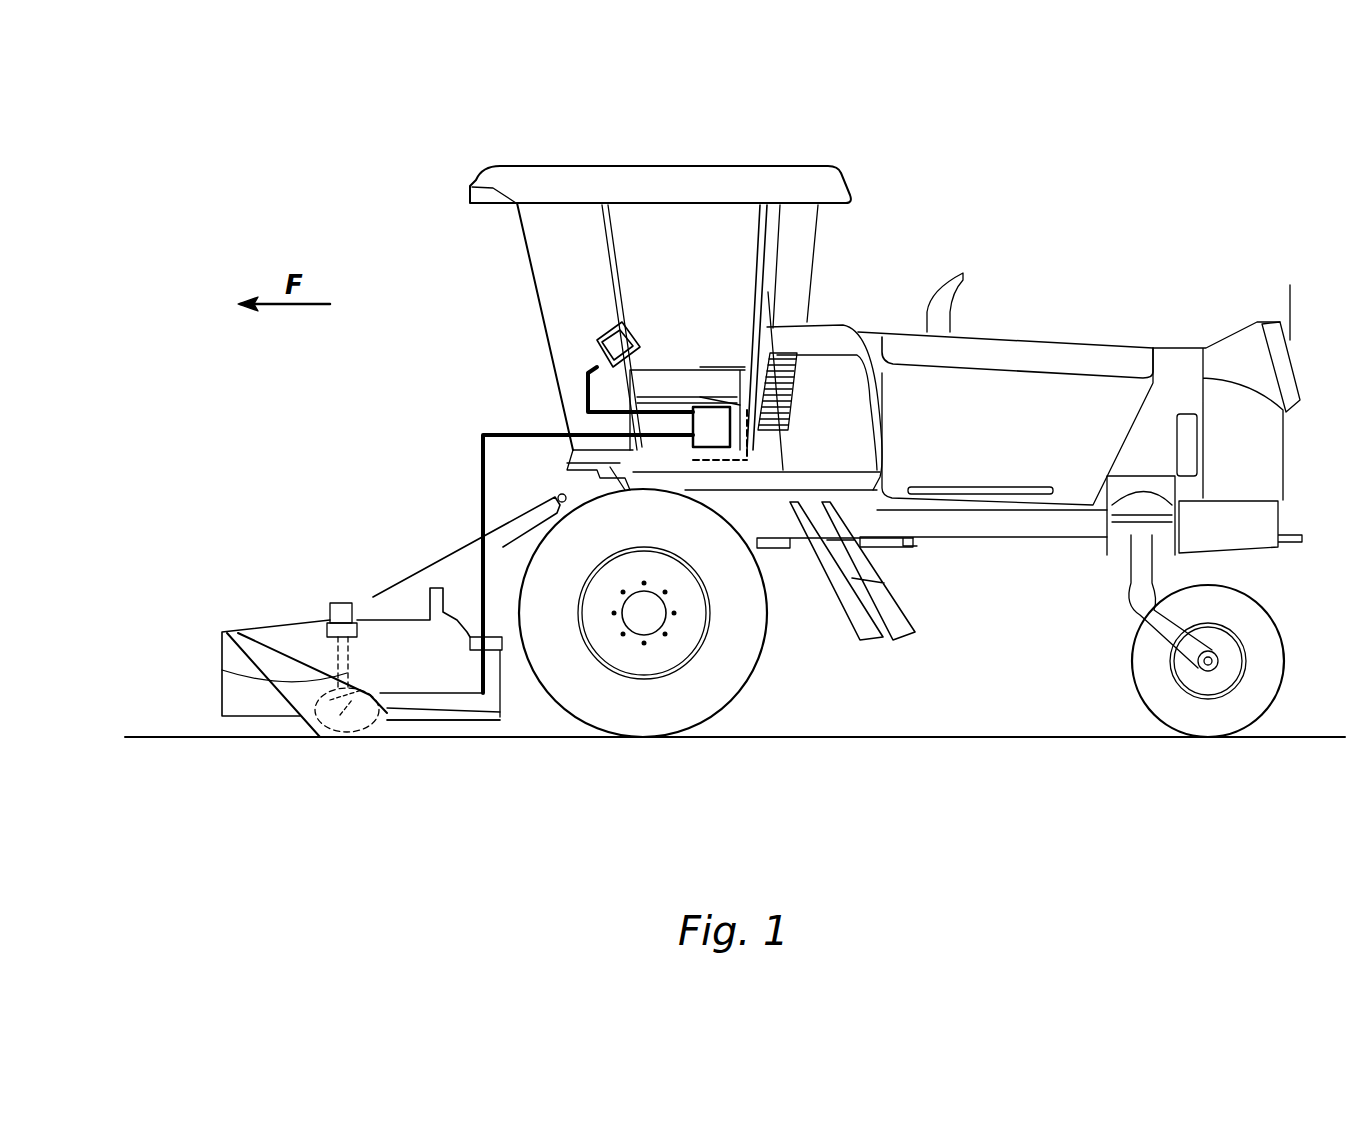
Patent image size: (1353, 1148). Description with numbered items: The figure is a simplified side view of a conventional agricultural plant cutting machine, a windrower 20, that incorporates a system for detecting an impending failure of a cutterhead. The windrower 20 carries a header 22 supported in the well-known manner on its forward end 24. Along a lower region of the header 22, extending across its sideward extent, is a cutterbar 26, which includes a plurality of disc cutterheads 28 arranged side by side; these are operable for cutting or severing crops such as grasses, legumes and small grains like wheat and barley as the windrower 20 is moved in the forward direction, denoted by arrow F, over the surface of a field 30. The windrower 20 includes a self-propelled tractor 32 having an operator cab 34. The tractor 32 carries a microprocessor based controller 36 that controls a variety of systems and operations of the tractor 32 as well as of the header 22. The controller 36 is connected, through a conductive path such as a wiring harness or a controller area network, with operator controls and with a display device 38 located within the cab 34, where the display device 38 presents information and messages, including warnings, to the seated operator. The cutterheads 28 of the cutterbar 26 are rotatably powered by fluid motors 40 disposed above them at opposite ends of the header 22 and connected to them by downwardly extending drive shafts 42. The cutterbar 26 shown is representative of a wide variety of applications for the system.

The windrower 20 is at (1088, 154).
The header 22 is at (275, 620).
The forward end 24 is at (557, 493).
The cutterbar 26 is at (348, 751).
The disc cutterheads 28 is at (410, 728).
The field 30 is at (143, 737).
The self-propelled tractor 32 is at (1183, 340).
The operator cab 34 is at (676, 166).
The controller 36 is at (705, 407).
The display device 38 is at (625, 326).
The fluid motors 40 is at (342, 603).
The drive shafts 42 is at (222, 668).